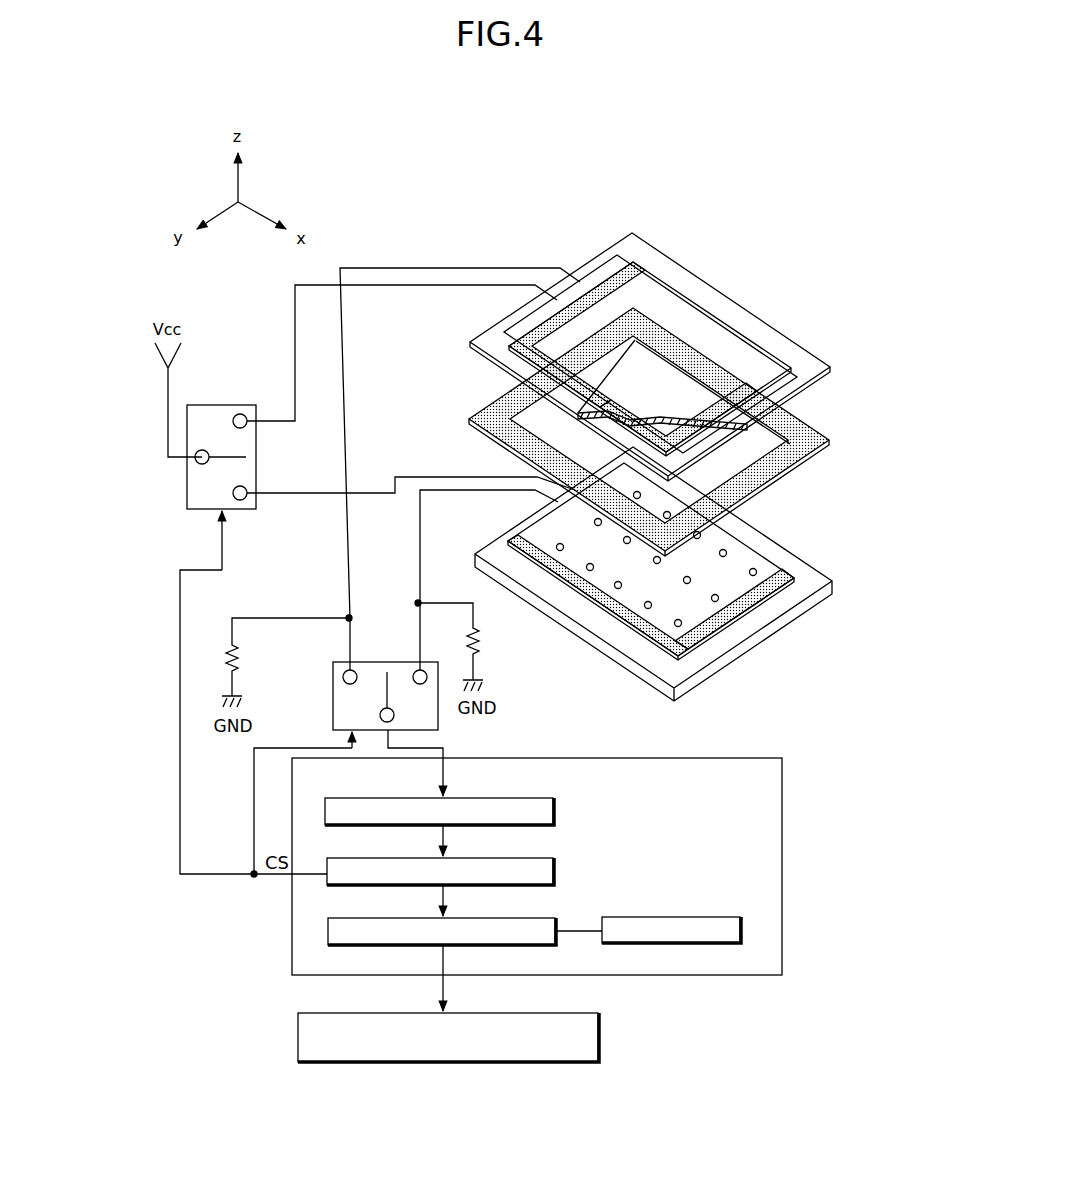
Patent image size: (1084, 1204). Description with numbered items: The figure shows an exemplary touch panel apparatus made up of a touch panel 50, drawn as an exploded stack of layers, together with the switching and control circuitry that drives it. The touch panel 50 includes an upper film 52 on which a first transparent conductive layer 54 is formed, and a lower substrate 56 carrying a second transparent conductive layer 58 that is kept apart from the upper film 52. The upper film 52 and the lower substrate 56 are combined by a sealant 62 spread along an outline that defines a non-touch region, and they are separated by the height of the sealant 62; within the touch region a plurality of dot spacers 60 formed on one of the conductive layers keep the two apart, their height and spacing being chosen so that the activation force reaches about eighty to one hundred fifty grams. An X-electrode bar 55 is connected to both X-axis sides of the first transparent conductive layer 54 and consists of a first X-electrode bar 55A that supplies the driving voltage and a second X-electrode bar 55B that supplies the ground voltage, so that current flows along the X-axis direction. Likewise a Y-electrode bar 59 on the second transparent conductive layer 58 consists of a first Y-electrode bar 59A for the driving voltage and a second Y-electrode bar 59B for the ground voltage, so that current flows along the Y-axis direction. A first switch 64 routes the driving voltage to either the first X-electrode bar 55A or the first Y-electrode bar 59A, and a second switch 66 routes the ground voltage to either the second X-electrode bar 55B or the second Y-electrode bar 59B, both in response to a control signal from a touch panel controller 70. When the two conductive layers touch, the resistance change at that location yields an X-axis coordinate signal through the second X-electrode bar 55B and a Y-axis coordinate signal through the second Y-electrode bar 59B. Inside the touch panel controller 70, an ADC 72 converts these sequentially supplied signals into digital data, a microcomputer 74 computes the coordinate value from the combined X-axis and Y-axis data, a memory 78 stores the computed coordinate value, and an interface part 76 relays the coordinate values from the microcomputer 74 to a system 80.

The touch panel 50 is at (673, 460).
The upper film 52 is at (634, 233).
The first transparent conductive layer 54 is at (663, 427).
The X-electrode bar 55 is at (663, 324).
The first X-electrode bar 55A is at (641, 270).
The second X-electrode bar 55B is at (773, 370).
The lower substrate 56 is at (528, 593).
The second transparent conductive layer 58 is at (692, 595).
The Y-electrode bar 59 is at (692, 631).
The first Y-electrode bar 59A is at (793, 583).
The second Y-electrode bar 59B is at (693, 650).
The dot spacers 60 is at (755, 569).
The sealant 62 is at (803, 427).
The first switch 64 is at (225, 405).
The second switch 66 is at (333, 698).
The touch panel controller 70 is at (567, 866).
The ADC 72 is at (553, 806).
The microcomputer 74 is at (553, 866).
The interface part 76 is at (556, 926).
The memory 78 is at (741, 926).
The system 80 is at (599, 1035).